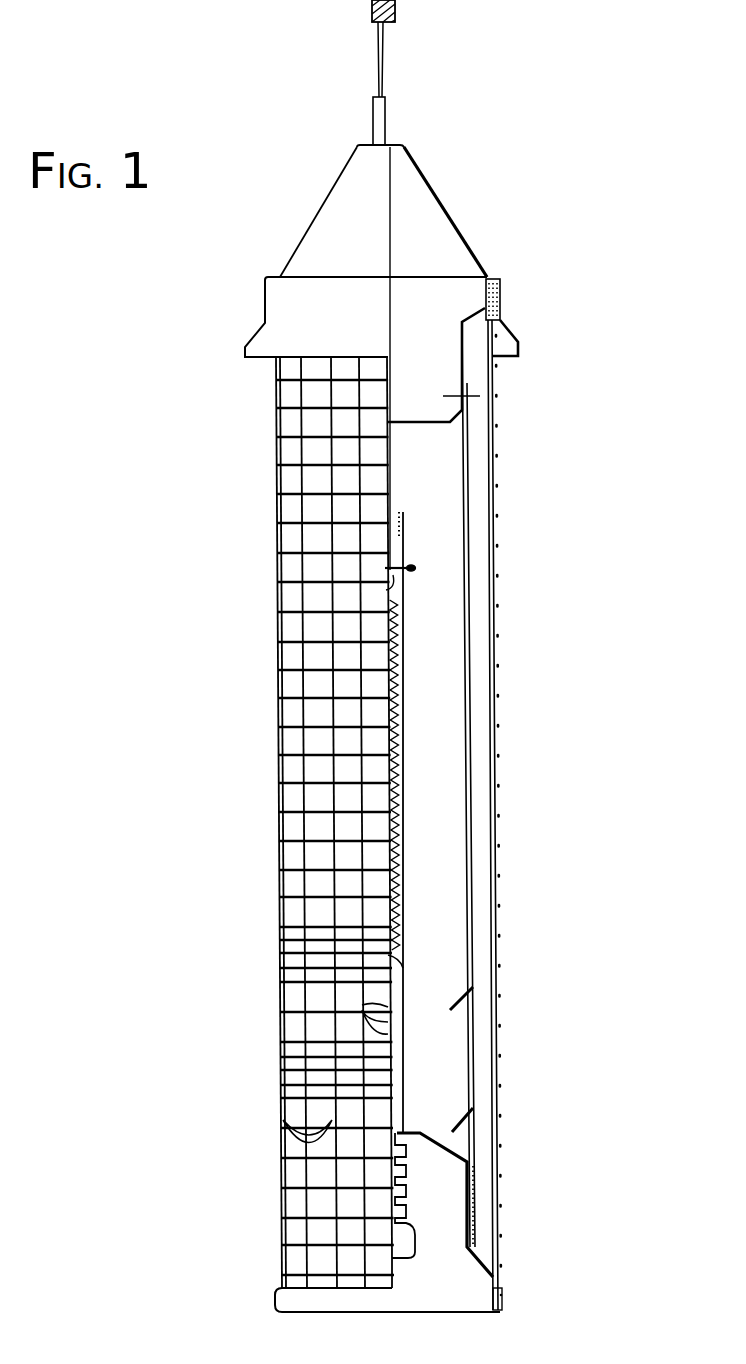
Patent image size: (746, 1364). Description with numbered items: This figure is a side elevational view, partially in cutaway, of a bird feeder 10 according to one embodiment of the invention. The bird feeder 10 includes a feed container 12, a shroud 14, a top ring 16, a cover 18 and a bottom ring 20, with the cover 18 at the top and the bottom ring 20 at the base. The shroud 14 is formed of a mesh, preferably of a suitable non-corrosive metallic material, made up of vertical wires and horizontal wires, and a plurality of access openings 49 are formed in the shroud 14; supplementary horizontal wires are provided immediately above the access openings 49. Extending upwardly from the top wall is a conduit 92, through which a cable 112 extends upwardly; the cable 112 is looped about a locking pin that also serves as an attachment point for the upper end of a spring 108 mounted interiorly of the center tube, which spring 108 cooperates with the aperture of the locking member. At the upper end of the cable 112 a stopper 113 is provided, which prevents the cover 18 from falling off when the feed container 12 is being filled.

The bird feeder 10 is at (590, 186).
The feed container 12 is at (444, 532).
The shroud 14 is at (508, 710).
The top ring 16 is at (475, 362).
The cover 18 is at (468, 202).
The bottom ring 20 is at (464, 1284).
The access openings 49 is at (278, 1118).
The conduit 92 is at (372, 113).
The spring 108 is at (393, 673).
The cable 112 is at (384, 60).
The stopper 113 is at (365, 5).